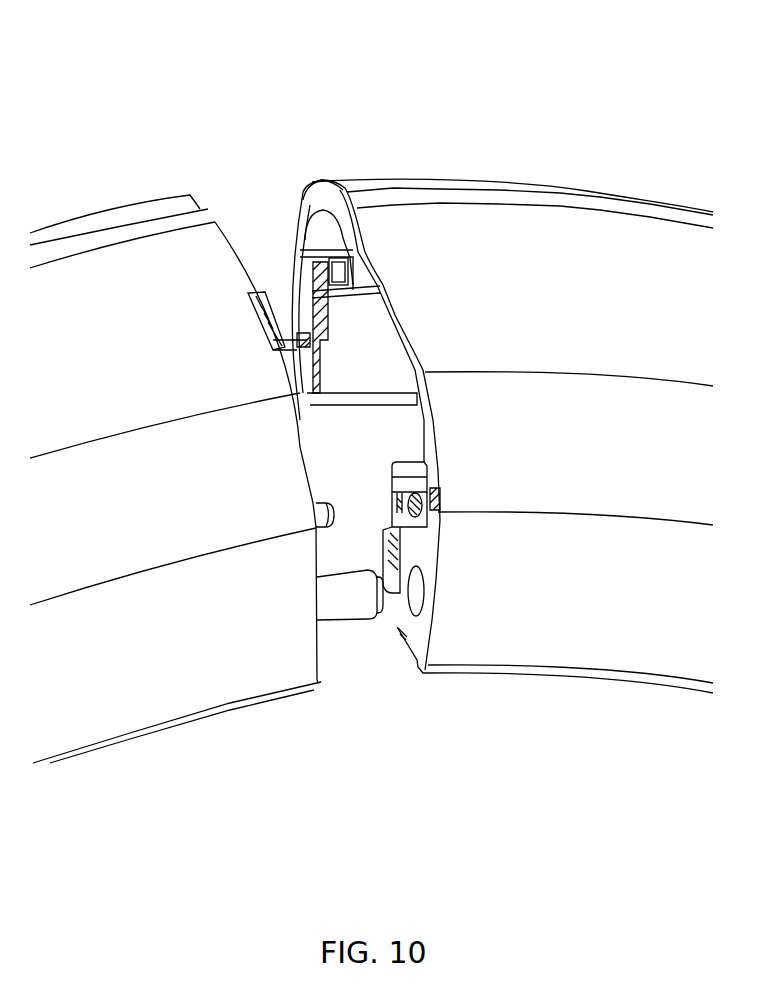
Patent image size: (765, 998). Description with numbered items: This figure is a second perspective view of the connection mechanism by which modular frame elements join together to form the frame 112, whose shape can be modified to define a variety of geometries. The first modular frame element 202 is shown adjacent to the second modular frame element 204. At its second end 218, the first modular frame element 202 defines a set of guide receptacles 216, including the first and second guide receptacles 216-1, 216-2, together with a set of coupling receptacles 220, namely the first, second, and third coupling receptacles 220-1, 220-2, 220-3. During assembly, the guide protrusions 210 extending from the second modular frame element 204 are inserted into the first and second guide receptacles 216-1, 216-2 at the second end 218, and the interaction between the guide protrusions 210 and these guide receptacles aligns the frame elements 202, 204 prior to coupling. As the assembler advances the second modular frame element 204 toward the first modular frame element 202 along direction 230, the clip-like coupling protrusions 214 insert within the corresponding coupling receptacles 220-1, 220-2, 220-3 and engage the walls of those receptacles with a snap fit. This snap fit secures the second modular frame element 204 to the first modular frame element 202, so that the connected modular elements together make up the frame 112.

The frame 112 is at (574, 89).
The first modular frame element 202 is at (410, 177).
The second modular frame element 204 is at (150, 203).
The guide protrusions 210 is at (291, 610).
The coupling protrusions 214 is at (230, 320).
The guide receptacles 216 is at (425, 638).
The first guide receptacle 216-1 is at (420, 583).
The second guide receptacle 216-2 is at (435, 497).
The second end 218 is at (304, 141).
The coupling receptacles 220 is at (432, 297).
The first coupling receptacle 220-1 is at (297, 280).
The second coupling receptacle 220-2 is at (383, 302).
The third coupling receptacle 220-3 is at (387, 522).
The direction 230 is at (344, 711).